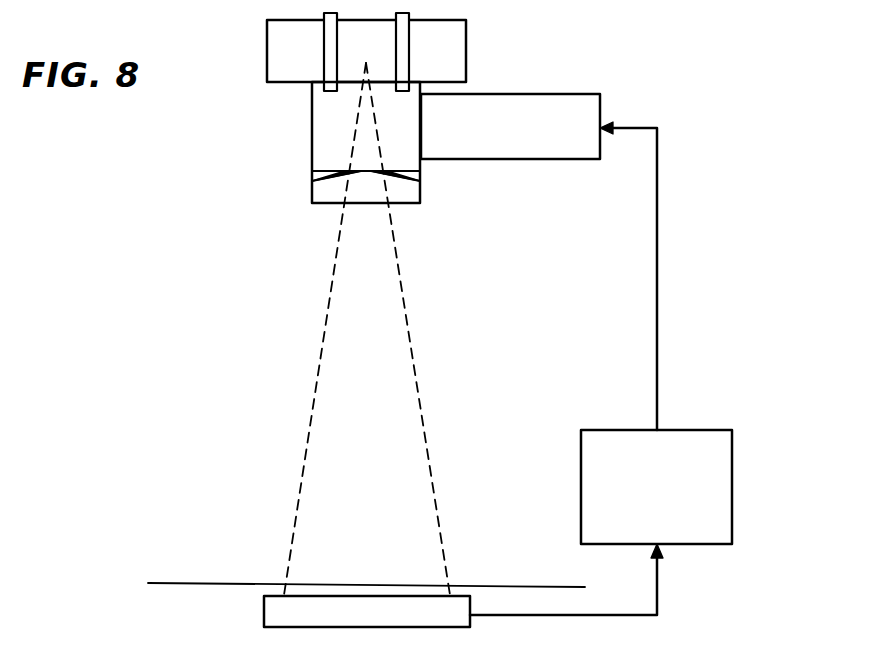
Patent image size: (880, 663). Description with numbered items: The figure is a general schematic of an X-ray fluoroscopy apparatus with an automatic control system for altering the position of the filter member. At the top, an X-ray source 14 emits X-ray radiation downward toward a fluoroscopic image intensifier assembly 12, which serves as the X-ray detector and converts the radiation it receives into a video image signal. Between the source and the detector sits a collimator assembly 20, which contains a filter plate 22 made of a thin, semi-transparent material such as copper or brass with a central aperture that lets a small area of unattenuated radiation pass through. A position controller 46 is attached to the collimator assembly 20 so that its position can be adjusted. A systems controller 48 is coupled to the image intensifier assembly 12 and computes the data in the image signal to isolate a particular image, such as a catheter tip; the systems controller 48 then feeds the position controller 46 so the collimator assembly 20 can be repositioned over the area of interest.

The fluoroscopic image intensifier assembly 12 is at (264, 606).
The X-ray source 14 is at (466, 40).
The collimator assembly 20 is at (288, 111).
The filter plate 22 is at (313, 182).
The position controller 46 is at (562, 94).
The systems controller 48 is at (618, 430).